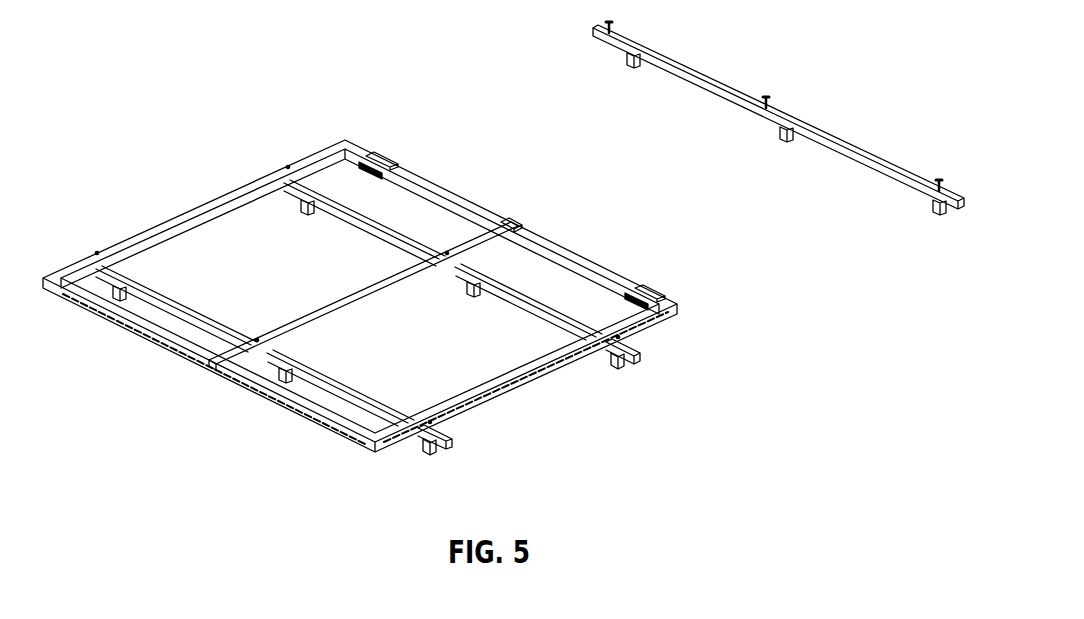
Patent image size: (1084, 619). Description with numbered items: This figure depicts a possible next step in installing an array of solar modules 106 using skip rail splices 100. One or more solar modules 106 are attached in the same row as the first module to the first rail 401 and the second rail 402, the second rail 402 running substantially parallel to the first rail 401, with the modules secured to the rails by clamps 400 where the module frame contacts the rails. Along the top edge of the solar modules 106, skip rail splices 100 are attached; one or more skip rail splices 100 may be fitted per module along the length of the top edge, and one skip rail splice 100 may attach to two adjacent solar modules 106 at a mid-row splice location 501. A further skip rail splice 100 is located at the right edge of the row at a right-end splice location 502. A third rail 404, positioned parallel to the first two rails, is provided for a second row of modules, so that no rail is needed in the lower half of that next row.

The skip rail splice 100 is at (521, 219).
The solar module 106 is at (178, 214).
The clamp 400 is at (643, 339).
The first rail 401 is at (461, 438).
The second rail 402 is at (649, 356).
The third rail 404 is at (952, 217).
The mid-row splice location 501 is at (494, 211).
The right-end splice location 502 is at (672, 294).